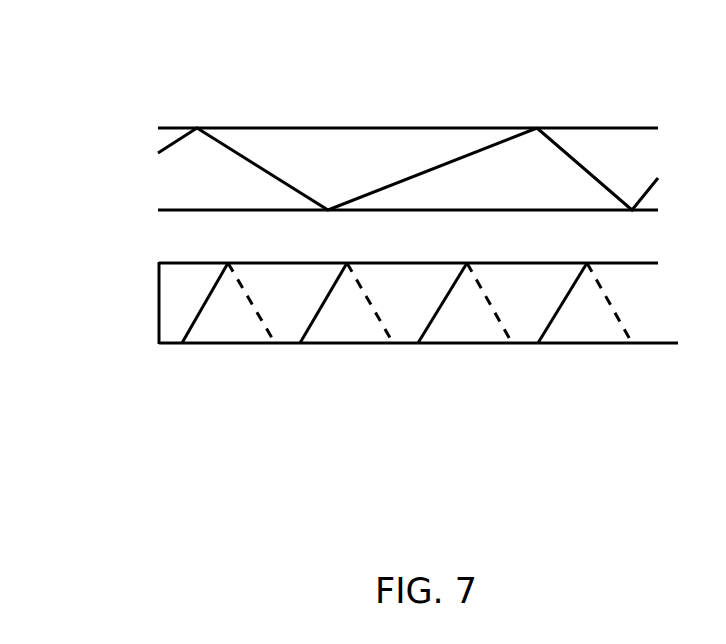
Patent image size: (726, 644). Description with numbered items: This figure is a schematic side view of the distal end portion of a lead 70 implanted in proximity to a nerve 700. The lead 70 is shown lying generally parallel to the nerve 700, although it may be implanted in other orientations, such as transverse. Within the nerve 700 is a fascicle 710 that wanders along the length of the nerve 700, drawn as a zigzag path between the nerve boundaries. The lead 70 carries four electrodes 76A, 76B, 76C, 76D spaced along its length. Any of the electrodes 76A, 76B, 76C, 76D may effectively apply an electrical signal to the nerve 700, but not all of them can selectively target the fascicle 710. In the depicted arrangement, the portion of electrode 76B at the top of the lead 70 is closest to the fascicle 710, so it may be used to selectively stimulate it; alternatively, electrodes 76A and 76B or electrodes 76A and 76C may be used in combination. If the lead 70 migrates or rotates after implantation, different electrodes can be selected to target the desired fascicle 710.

The nerve 700 is at (388, 104).
The fascicle 710 is at (570, 154).
The lead 70 is at (168, 394).
The electrode 76A is at (202, 314).
The electrode 76B is at (320, 314).
The electrode 76C is at (438, 314).
The electrode 76D is at (560, 308).